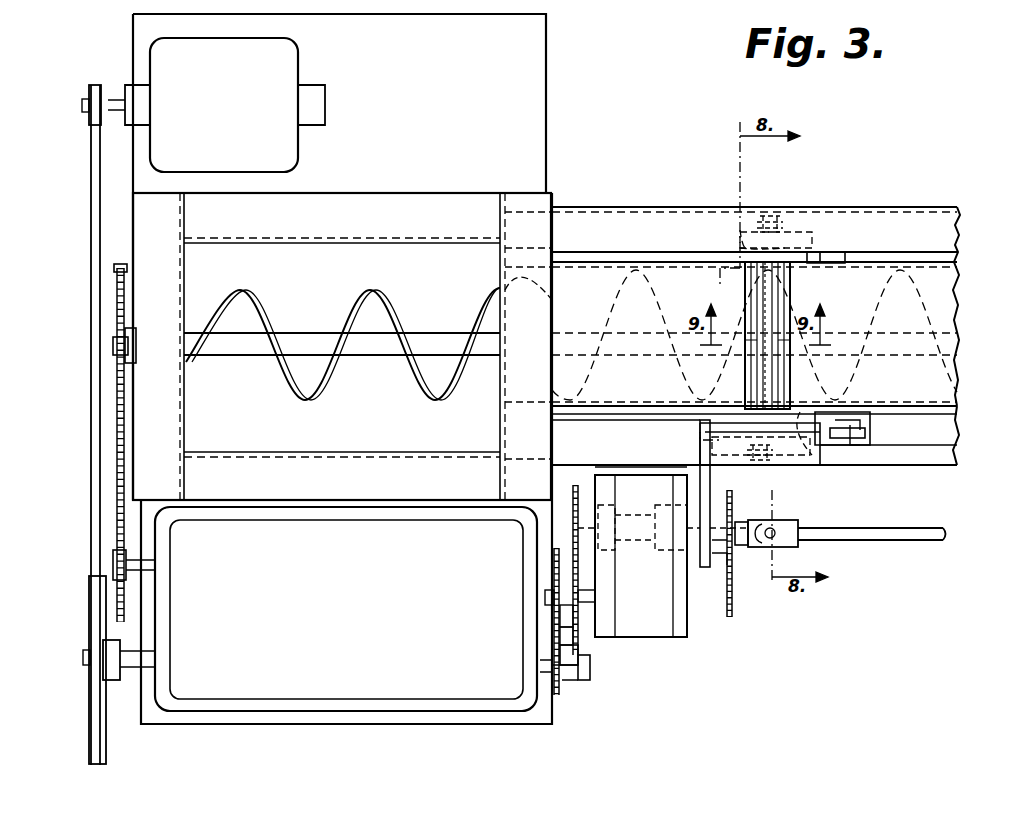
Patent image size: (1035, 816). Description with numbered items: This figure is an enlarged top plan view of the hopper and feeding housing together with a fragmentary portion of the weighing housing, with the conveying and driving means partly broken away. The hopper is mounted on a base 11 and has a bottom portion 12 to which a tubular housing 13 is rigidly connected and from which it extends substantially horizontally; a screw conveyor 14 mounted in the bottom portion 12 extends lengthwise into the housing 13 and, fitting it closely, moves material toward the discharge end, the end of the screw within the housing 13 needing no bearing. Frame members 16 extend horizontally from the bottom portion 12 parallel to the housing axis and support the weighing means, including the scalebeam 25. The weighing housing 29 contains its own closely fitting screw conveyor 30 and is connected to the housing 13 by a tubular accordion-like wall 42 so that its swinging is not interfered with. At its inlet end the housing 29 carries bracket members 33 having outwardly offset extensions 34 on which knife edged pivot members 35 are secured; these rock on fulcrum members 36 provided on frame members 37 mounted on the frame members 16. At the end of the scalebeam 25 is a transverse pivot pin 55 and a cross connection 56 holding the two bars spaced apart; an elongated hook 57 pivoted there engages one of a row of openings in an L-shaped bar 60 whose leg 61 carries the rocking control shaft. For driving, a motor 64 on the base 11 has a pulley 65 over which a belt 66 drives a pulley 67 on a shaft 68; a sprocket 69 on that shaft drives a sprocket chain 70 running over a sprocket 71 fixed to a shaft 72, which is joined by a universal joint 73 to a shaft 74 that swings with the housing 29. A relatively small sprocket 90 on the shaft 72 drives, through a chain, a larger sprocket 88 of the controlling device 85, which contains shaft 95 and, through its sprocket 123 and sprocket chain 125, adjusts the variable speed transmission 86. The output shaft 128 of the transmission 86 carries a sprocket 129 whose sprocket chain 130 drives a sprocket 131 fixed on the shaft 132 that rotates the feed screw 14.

The base 11 is at (530, 96).
The bottom portion 12 is at (430, 252).
The tubular housing 13 is at (590, 282).
The screw conveyor 14 is at (372, 310).
The frame members 16 is at (938, 226).
The scalebeam 25 is at (945, 432).
The weighing housing 29 is at (962, 268).
The screw conveyor 30 is at (950, 322).
The bracket members 33 is at (832, 262).
The outwardly offset extensions 34 is at (788, 240).
The knife edged pivot members 35 is at (778, 222).
The fulcrum members 36 is at (766, 215).
The frame members 37 is at (735, 232).
The tubular accordion-like wall 42 is at (792, 294).
The transverse pivot pin 55 is at (840, 446).
The cross connection 56 is at (812, 412).
The elongated hook 57 is at (858, 446).
The bar 60 is at (718, 423).
The leg 61 is at (710, 512).
The motor 64 is at (292, 92).
The pulley 65 is at (88, 92).
The belt 66 is at (92, 268).
The pulley 67 is at (94, 684).
The shaft 68 is at (142, 662).
The sprocket 69 is at (583, 650).
The sprocket chain 70 is at (553, 578).
The sprocket 71 is at (570, 506).
The shaft 72 is at (570, 530).
The universal joint 73 is at (792, 540).
The shaft 74 is at (885, 533).
The controlling device 85 is at (665, 625).
The variable speed transmission 86 is at (460, 690).
The sprocket 88 is at (734, 600).
The sprocket 90 is at (740, 558).
The shaft 95 is at (595, 596).
The sprocket 123 is at (560, 615).
The sprocket chain 125 is at (560, 634).
The output shaft 128 is at (148, 568).
The sprocket 129 is at (116, 556).
The sprocket chain 130 is at (118, 432).
The sprocket 131 is at (118, 300).
The shaft 132 is at (115, 346).